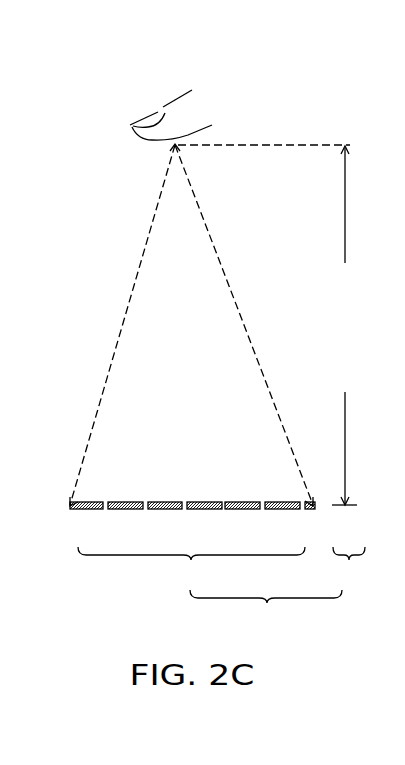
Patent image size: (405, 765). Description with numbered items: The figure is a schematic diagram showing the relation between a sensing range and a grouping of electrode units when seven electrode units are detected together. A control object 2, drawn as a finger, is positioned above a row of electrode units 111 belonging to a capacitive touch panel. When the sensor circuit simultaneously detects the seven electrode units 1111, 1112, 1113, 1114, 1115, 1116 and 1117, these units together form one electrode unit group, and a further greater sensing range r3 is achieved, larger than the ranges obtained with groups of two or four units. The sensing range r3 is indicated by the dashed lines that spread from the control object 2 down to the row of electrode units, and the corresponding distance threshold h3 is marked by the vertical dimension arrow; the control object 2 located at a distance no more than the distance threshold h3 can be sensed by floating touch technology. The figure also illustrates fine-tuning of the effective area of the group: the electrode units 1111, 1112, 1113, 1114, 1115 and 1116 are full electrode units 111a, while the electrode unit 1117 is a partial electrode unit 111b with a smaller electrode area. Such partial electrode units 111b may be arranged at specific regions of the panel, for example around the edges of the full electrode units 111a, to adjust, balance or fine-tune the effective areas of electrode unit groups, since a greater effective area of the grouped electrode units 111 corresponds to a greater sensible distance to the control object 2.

The control object 2 is at (177, 90).
The sensing range r3 is at (135, 326).
The distance threshold h3 is at (345, 325).
The electrode units 111 is at (266, 610).
The full electrode units 111a is at (191, 569).
The partial electrode unit 111b is at (352, 569).
The electrode unit 1111 is at (165, 510).
The electrode unit 1112 is at (205, 510).
The electrode unit 1113 is at (125, 510).
The electrode unit 1114 is at (246, 510).
The electrode unit 1115 is at (80, 510).
The electrode unit 1116 is at (288, 510).
The electrode unit 1117 is at (313, 510).